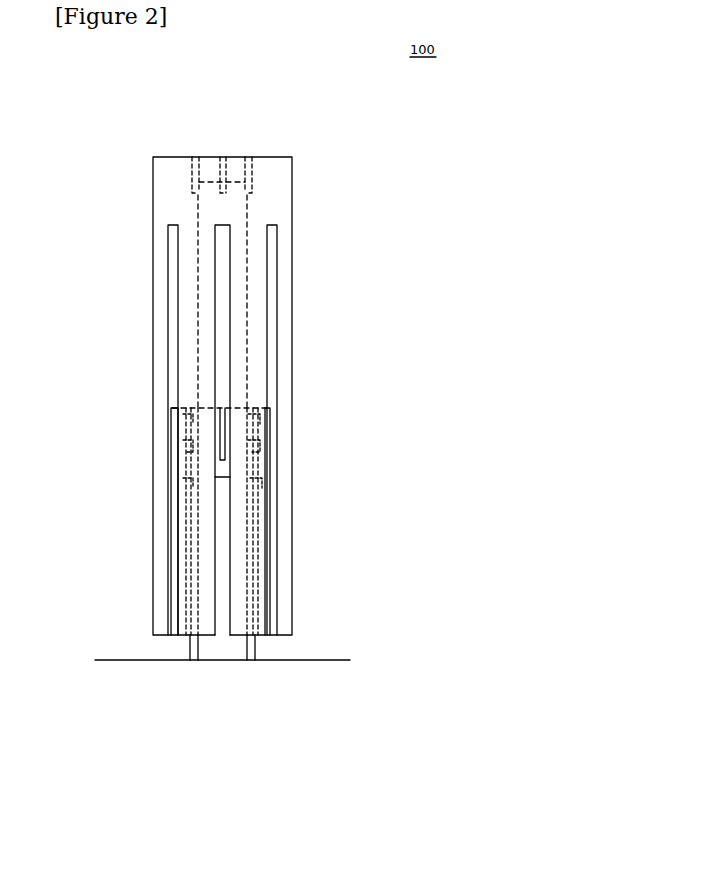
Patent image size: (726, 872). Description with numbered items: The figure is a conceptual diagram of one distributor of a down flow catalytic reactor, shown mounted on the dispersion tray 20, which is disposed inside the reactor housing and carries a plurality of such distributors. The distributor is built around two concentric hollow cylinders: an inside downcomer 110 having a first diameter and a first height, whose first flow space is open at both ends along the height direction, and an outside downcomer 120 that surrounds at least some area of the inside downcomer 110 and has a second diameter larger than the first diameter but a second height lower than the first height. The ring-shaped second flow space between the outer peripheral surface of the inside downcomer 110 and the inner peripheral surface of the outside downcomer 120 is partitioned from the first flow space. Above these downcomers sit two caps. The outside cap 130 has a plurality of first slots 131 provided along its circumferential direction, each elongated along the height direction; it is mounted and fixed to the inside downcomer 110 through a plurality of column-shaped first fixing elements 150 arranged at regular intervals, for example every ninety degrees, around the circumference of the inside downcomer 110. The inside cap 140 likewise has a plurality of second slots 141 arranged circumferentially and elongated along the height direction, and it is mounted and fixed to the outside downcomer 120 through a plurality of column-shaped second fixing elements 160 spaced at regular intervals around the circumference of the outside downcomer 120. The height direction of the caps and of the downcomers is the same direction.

The outside cap 130 is at (293, 160).
The first slots 131 is at (278, 252).
The inside downcomer 110 is at (198, 275).
The first fixing element 150 is at (250, 157).
The inside cap 140 is at (177, 408).
The second fixing element 160 is at (257, 422).
The second slots 141 is at (182, 527).
The outside downcomer 120 is at (192, 645).
The dispersion tray 20 is at (322, 663).